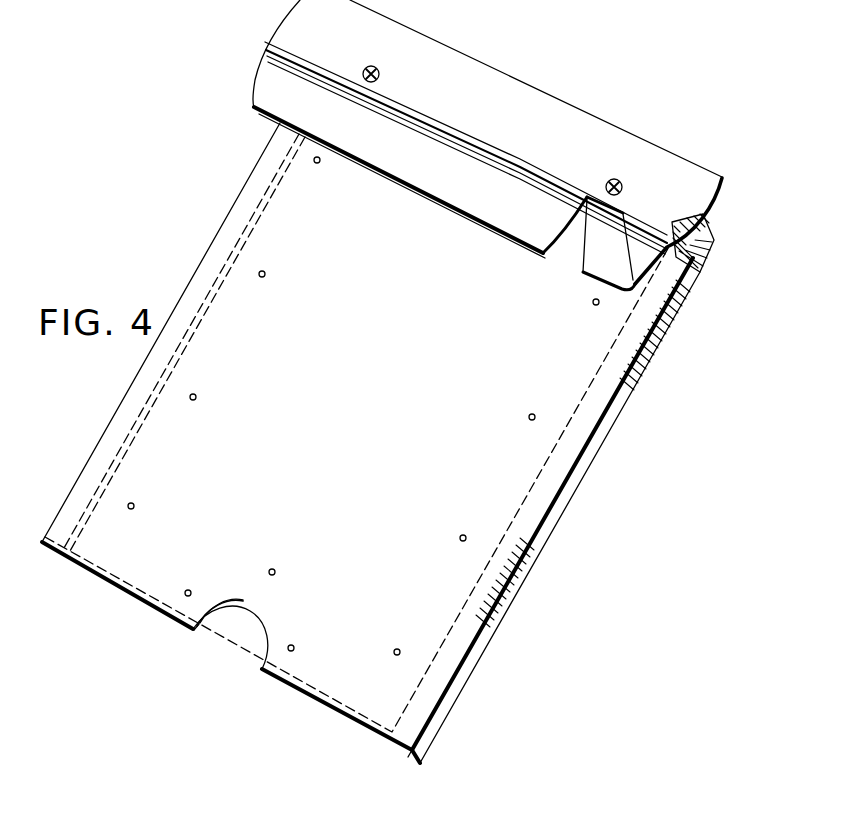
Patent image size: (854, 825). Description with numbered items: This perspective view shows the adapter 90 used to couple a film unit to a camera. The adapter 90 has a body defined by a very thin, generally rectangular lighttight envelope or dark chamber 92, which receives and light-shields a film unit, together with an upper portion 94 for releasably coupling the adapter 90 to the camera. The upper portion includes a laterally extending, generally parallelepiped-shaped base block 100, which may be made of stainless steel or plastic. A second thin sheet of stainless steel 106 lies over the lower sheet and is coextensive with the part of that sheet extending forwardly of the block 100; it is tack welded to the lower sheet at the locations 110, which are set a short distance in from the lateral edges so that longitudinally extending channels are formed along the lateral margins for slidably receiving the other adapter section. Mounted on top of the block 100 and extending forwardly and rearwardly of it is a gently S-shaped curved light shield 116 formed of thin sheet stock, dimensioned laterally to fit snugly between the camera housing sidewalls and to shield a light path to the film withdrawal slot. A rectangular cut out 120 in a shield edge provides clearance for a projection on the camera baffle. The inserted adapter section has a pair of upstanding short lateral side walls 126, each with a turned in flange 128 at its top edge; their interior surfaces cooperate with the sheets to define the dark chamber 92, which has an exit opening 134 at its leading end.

The adapter 90 is at (634, 548).
The lighttight envelope or dark chamber 92 is at (334, 672).
The upper portion 94 is at (716, 257).
The base block 100 is at (716, 236).
The second thin sheet of stainless steel 106 is at (382, 438).
The tack weld locations 110 is at (596, 306).
The light shield 116 is at (563, 119).
The rectangular cut out 120 is at (596, 226).
The lateral side walls 126 is at (598, 444).
The turned in flange 128 is at (541, 481).
The exit opening 134 is at (207, 633).